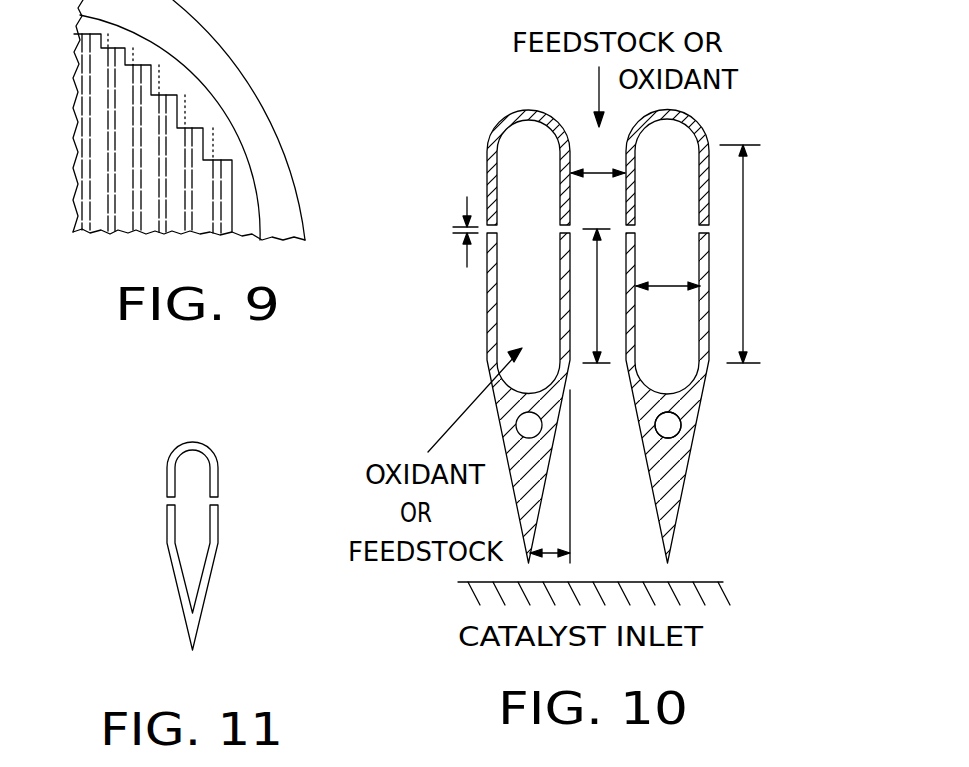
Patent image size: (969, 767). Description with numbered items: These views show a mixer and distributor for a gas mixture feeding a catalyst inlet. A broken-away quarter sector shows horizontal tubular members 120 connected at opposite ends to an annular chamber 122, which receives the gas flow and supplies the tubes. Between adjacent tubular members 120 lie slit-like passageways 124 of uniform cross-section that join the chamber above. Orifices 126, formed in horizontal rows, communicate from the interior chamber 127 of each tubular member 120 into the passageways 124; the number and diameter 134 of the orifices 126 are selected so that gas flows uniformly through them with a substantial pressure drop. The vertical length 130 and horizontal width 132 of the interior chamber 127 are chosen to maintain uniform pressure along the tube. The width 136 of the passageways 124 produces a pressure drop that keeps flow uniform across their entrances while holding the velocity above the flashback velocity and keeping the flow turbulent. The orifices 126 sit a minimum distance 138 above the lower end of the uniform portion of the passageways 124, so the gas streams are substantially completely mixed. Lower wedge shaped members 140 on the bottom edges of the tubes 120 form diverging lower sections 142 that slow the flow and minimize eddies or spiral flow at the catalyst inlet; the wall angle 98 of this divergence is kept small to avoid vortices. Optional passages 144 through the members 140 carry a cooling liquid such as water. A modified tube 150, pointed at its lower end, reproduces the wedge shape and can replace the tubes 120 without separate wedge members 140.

In FIG. 10, the angle 98 is at (553, 557).
In FIG. 9, the tubular member 120 is at (203, 182).
In FIG. 10, the tubular member 120 is at (489, 135).
In FIG. 9, the annular chamber 122 is at (220, 63).
In FIG. 10, the slit-like passageway 124 is at (620, 117).
In FIG. 10, the orifice 126 is at (557, 228).
In FIG. 10, the interior chamber 127 is at (672, 150).
In FIG. 10, the vertical length 130 is at (743, 233).
In FIG. 10, the horizontal width 132 is at (665, 286).
In FIG. 10, the orifice diameter 134 is at (453, 230).
In FIG. 10, the passageway width 136 is at (600, 172).
In FIG. 10, the minimum distance 138 is at (597, 298).
In FIG. 10, the wedge shaped member 140 is at (670, 458).
In FIG. 10, the diverging lower section 142 is at (600, 483).
In FIG. 10, the passage 144 is at (667, 425).
In FIG. 11, the modified tube 150 is at (215, 477).